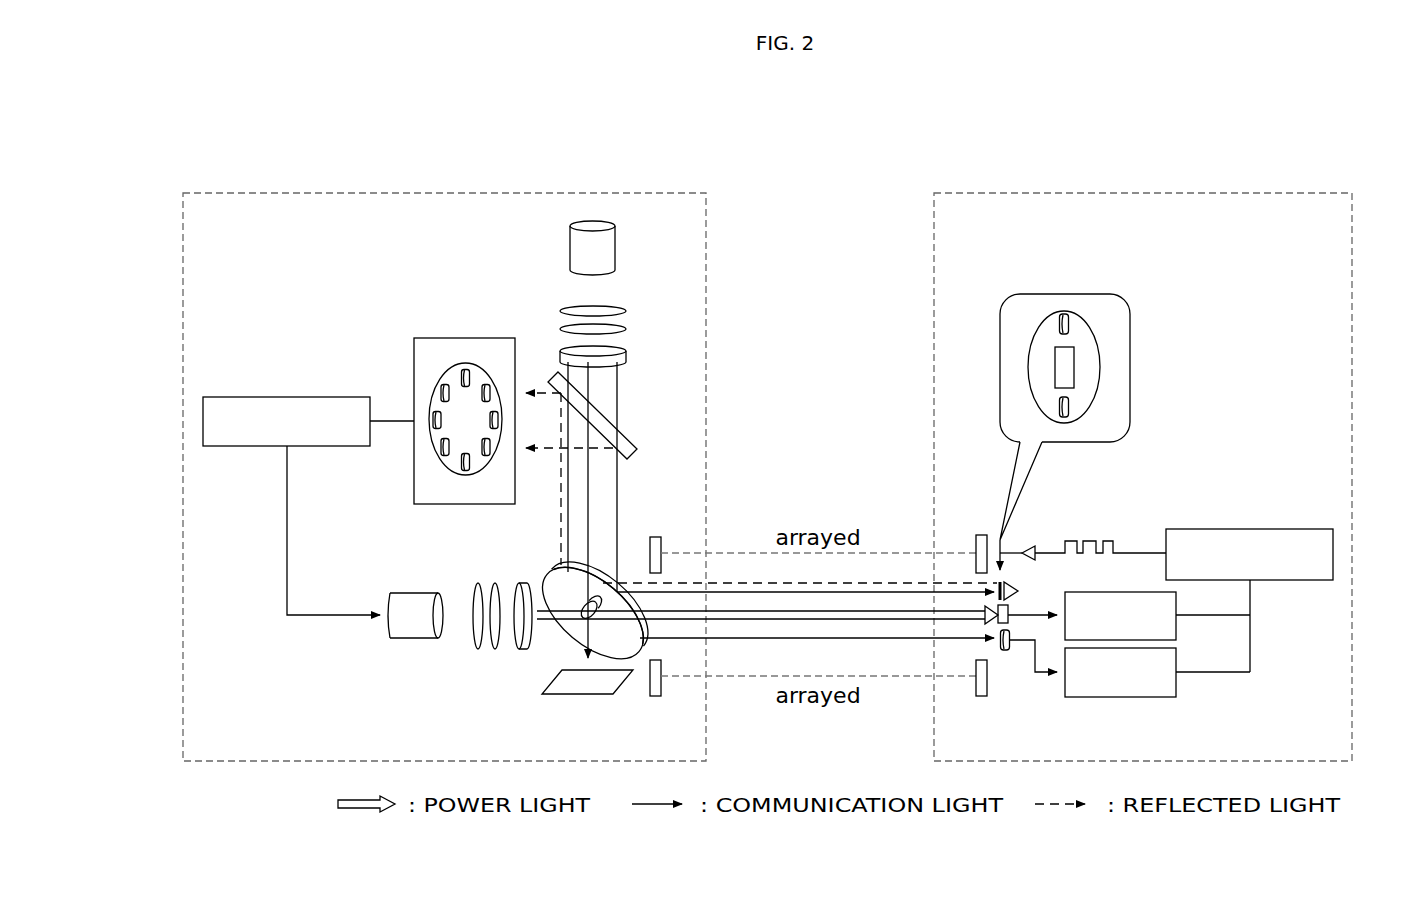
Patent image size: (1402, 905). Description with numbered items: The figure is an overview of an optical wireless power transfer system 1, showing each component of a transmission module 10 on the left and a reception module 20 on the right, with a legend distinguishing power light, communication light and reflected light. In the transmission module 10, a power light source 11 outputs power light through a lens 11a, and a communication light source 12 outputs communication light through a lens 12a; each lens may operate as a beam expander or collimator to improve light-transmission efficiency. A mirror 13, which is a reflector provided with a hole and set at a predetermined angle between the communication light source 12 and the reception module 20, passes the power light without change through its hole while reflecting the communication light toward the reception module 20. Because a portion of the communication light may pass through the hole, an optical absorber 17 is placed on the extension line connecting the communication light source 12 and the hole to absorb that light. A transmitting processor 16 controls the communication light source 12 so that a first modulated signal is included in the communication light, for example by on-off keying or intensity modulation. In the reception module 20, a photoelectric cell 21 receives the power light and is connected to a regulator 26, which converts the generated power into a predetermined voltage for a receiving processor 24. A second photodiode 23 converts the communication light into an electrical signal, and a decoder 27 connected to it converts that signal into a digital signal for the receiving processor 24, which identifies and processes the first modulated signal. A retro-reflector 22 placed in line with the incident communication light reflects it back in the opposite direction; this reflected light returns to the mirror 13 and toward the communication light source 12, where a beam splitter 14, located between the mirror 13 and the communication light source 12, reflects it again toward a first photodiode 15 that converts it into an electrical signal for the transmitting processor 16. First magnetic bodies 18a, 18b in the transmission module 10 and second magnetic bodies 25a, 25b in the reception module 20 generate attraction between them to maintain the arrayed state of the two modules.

The optical wireless power transfer system 1 is at (182, 141).
The transmission module 10 is at (440, 192).
The power light source 11 is at (415, 640).
The lens 11a is at (473, 654).
The communication light source 12 is at (618, 247).
The lens 12a is at (632, 307).
The mirror 13 is at (555, 578).
The beam splitter 14 is at (620, 430).
The first photodiode 15 is at (466, 337).
The transmitting processor 16 is at (287, 396).
The optical absorber 17 is at (577, 696).
The first magnetic body 18a is at (655, 535).
The first magnetic body 18b is at (655, 697).
The reception module 20 is at (1156, 192).
The photoelectric cell 21 is at (1055, 367).
The retro-reflector 22 is at (1017, 584).
The second photodiode 23 is at (1069, 407).
The receiving processor 24 is at (1251, 528).
The second magnetic body 25a is at (983, 533).
The second magnetic body 25b is at (983, 698).
The regulator 26 is at (1178, 633).
The decoder 27 is at (1178, 689).